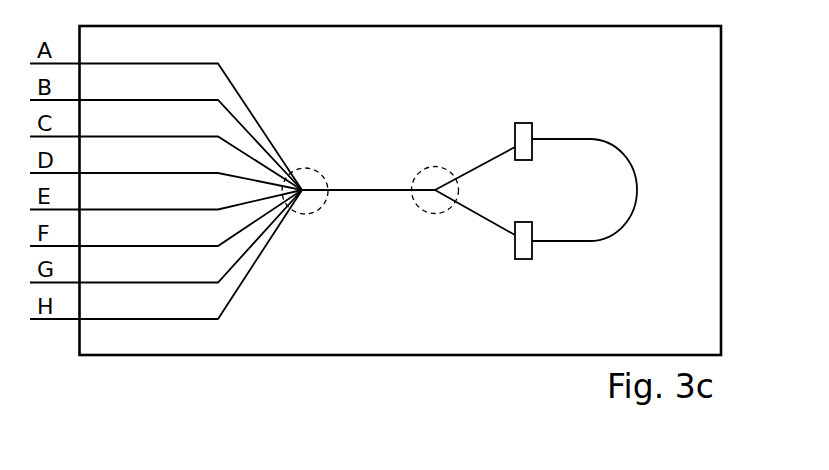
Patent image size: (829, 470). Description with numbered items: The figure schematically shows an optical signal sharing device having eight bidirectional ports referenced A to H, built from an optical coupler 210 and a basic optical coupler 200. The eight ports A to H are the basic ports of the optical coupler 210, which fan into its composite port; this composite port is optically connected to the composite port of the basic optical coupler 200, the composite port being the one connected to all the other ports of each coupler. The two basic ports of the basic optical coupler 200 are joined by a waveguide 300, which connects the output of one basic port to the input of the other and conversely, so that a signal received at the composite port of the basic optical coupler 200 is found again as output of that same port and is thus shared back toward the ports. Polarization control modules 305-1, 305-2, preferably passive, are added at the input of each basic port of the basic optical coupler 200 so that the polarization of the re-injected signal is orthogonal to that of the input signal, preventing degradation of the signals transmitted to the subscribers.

The optical coupler 210 is at (321, 171).
The basic optical coupler 200 is at (419, 171).
The polarization control module 305-1 is at (521, 130).
The polarization control module 305-2 is at (520, 258).
The waveguide 300 is at (632, 217).